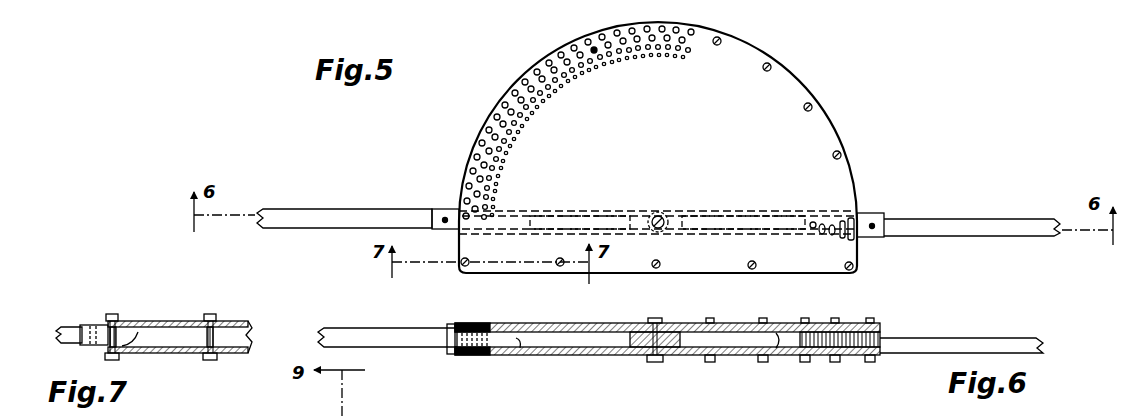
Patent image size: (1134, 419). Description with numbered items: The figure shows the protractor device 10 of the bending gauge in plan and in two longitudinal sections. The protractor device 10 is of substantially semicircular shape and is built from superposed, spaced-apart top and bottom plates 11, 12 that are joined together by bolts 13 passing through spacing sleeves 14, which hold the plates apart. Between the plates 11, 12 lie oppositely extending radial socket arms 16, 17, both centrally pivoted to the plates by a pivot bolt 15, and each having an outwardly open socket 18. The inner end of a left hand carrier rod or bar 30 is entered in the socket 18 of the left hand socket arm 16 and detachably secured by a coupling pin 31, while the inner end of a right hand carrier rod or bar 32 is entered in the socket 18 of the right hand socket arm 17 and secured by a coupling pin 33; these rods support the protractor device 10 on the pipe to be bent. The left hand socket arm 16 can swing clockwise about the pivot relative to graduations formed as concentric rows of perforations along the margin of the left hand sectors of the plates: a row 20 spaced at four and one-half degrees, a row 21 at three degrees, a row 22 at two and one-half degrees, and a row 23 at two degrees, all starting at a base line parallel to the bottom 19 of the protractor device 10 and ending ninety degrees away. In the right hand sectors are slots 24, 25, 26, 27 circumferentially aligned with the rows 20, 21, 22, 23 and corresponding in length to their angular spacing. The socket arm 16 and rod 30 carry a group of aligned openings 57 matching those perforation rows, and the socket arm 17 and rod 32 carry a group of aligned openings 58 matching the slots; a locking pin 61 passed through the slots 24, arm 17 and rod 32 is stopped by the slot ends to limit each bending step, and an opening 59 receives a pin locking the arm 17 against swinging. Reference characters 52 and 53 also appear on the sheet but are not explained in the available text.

In FIG. 5, the protractor device 10 is at (760, 48).
In FIG. 6, the protractor device 10 is at (641, 322).
In FIG. 6, the top plate 11 is at (574, 323).
In FIG. 7, the top plate 11 is at (178, 321).
In FIG. 6, the bottom plate 12 is at (568, 356).
In FIG. 7, the bottom plate 12 is at (166, 355).
In FIG. 5, the bolts 13 is at (822, 112).
In FIG. 6, the bolts 13 is at (730, 306).
In FIG. 7, the bolts 13 is at (116, 316).
In FIG. 7, the spacing sleeves 14 is at (213, 326).
In FIG. 5, the pivot bolt 15 is at (660, 215).
In FIG. 6, the pivot bolt 15 is at (661, 320).
In FIG. 5, the left hand socket arm 16 is at (442, 208).
In FIG. 6, the left hand socket arm 16 is at (446, 356).
In FIG. 7, the left hand socket arm 16 is at (90, 324).
In FIG. 5, the right hand socket arm 17 is at (874, 213).
In FIG. 6, the right hand socket arm 17 is at (886, 334).
In FIG. 5, the socket 18 is at (548, 216).
In FIG. 6, the socket 18 is at (525, 354).
In FIG. 5, the bottom 19 is at (624, 276).
In FIG. 5, the row of perforations 20 is at (510, 90).
In FIG. 5, the row of perforations 21 is at (540, 76).
In FIG. 5, the row of perforations 22 is at (555, 92).
In FIG. 5, the row of perforations 23 is at (518, 147).
In FIG. 5, the slot 24 is at (858, 248).
In FIG. 5, the slot 25 is at (841, 240).
In FIG. 5, the slot 26 is at (825, 223).
In FIG. 5, the slot 27 is at (820, 240).
In FIG. 5, the left hand carrier rod or bar 30 is at (356, 210).
In FIG. 6, the left hand carrier rod or bar 30 is at (388, 330).
In FIG. 7, the left hand carrier rod or bar 30 is at (70, 328).
In FIG. 5, the coupling pin 31 is at (444, 225).
In FIG. 6, the coupling pin 31 is at (444, 328).
In FIG. 7, the coupling pin 31 is at (102, 324).
In FIG. 5, the right hand carrier rod or bar 32 is at (990, 221).
In FIG. 6, the right hand carrier rod or bar 32 is at (930, 346).
In FIG. 5, the coupling pin 33 is at (880, 224).
In FIG. 6, the coupling pin 33 is at (876, 330).
In FIG. 6, the section line member 52 is at (350, 418).
In FIG. 6, the section member 53 is at (806, 410).
In FIG. 6, the group of aligned openings 57 is at (466, 357).
In FIG. 6, the group of aligned openings 58 is at (850, 352).
In FIG. 5, the opening 59 is at (813, 222).
In FIG. 6, the opening 59 is at (802, 360).
In FIG. 5, the locking pin 61 is at (862, 214).
In FIG. 6, the locking pin 61 is at (856, 324).